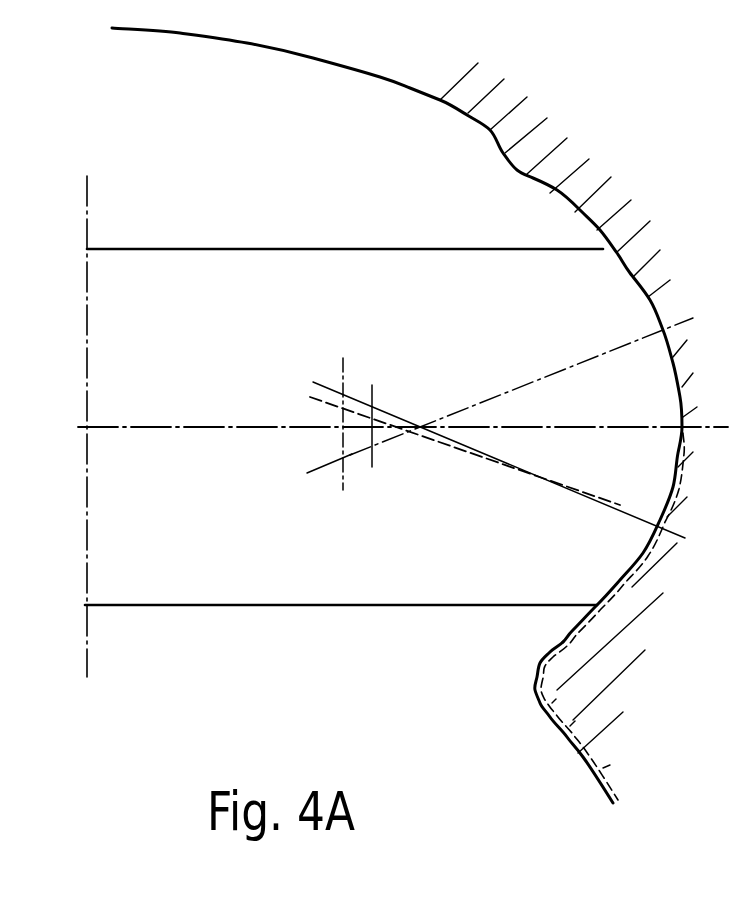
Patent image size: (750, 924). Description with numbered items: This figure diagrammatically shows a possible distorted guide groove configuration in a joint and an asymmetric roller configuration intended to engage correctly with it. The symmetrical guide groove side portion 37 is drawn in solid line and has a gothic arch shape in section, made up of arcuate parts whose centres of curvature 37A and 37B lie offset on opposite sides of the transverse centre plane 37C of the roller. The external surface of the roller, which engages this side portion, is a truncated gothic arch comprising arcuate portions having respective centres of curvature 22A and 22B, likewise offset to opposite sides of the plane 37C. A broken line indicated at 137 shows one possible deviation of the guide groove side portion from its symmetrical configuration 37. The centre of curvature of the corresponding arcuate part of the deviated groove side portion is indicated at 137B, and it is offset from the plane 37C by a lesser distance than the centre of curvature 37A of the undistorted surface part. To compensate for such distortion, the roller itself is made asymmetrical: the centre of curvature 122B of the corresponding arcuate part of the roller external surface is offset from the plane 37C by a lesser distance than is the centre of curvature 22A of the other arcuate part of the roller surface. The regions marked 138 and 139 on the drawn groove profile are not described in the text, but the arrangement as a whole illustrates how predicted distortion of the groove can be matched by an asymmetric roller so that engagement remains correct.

The guide groove side portion 37 is at (568, 640).
The deviated guide groove side portion 137 is at (552, 689).
The bowl wall surface 138 is at (665, 328).
The bowl wall lower surface 139 is at (657, 533).
The centre of curvature of guide groove arcuate portion 37A is at (343, 462).
The centre of curvature of guide groove arcuate portion 37B is at (346, 408).
The transverse centre plane 37C is at (194, 430).
The centre of curvature of roller arcuate portion 22A is at (373, 452).
The centre of curvature of roller arcuate portion 22B is at (372, 410).
The compensating centre of curvature of roller arcuate portion 122B is at (375, 412).
The centre of curvature of deviated guide groove arcuate portion 137B is at (348, 405).